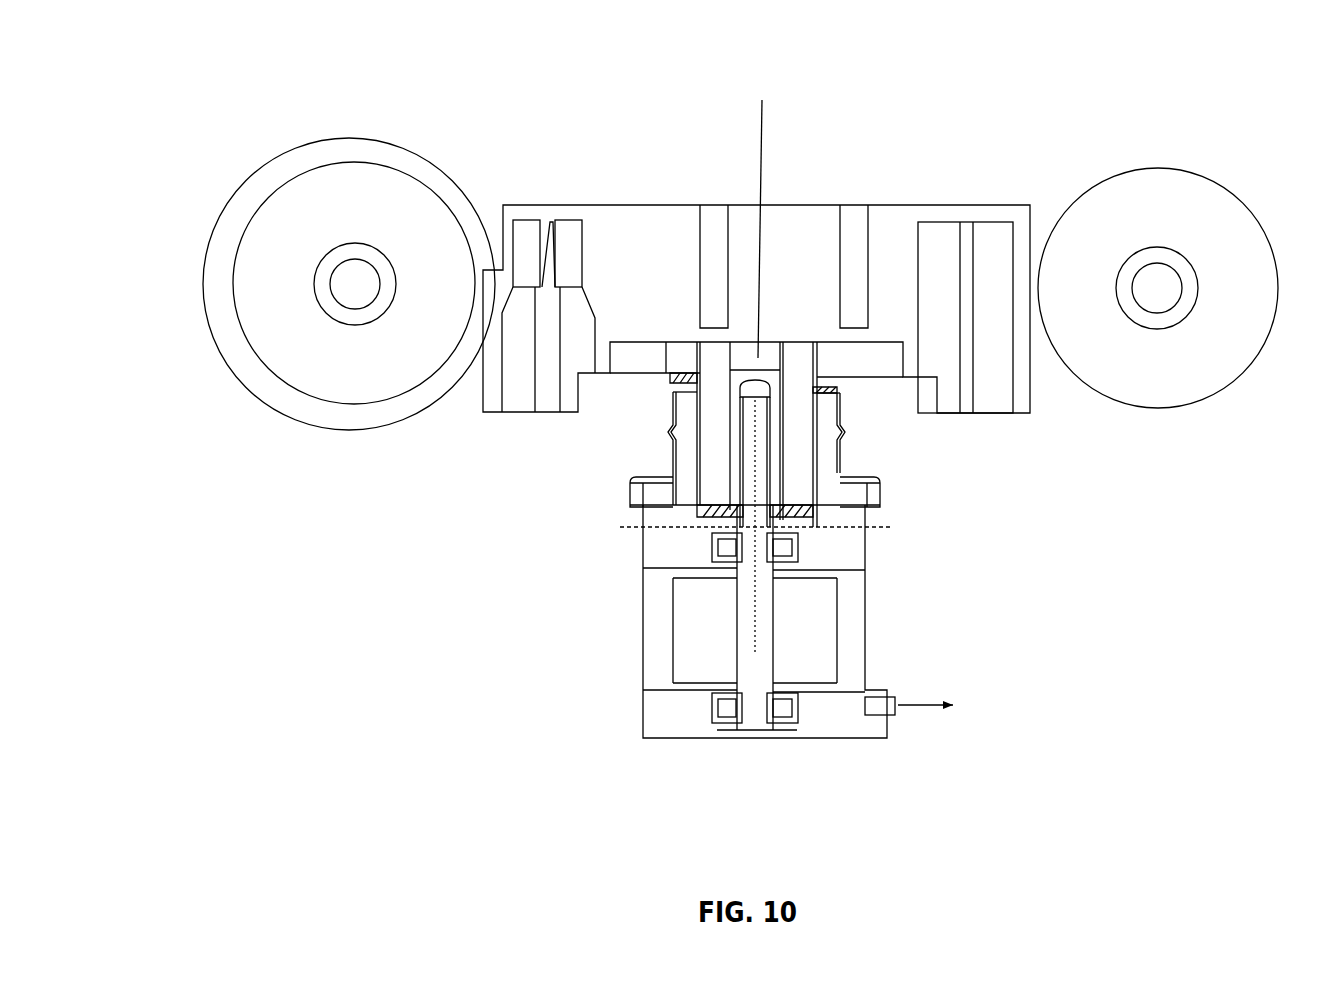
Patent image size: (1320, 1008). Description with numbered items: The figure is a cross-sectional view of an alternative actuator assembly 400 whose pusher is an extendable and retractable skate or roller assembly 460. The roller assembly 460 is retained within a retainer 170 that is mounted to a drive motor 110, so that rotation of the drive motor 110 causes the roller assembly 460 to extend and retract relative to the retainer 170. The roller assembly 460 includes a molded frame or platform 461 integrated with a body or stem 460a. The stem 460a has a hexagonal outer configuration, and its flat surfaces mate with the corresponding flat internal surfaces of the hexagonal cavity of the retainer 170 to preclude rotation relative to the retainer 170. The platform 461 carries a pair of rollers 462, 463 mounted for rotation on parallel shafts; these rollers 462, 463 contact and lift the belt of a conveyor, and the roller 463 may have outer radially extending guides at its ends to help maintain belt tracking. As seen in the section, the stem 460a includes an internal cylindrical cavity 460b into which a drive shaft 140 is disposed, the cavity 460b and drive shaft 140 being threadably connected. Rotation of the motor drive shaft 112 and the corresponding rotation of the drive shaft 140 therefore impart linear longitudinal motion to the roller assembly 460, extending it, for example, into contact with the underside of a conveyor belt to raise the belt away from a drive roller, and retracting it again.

The actuator assembly 400 is at (432, 70).
The drive motor 110 is at (870, 593).
The motor drive shaft 112 is at (748, 445).
The drive shaft 140 is at (733, 400).
The retainer 170 is at (885, 487).
The roller assembly 460 is at (613, 200).
The stem 460a is at (818, 408).
The internal cylindrical cavity 460b is at (783, 217).
The platform 461 is at (902, 203).
The roller 462 is at (1150, 170).
The roller 463 is at (235, 375).